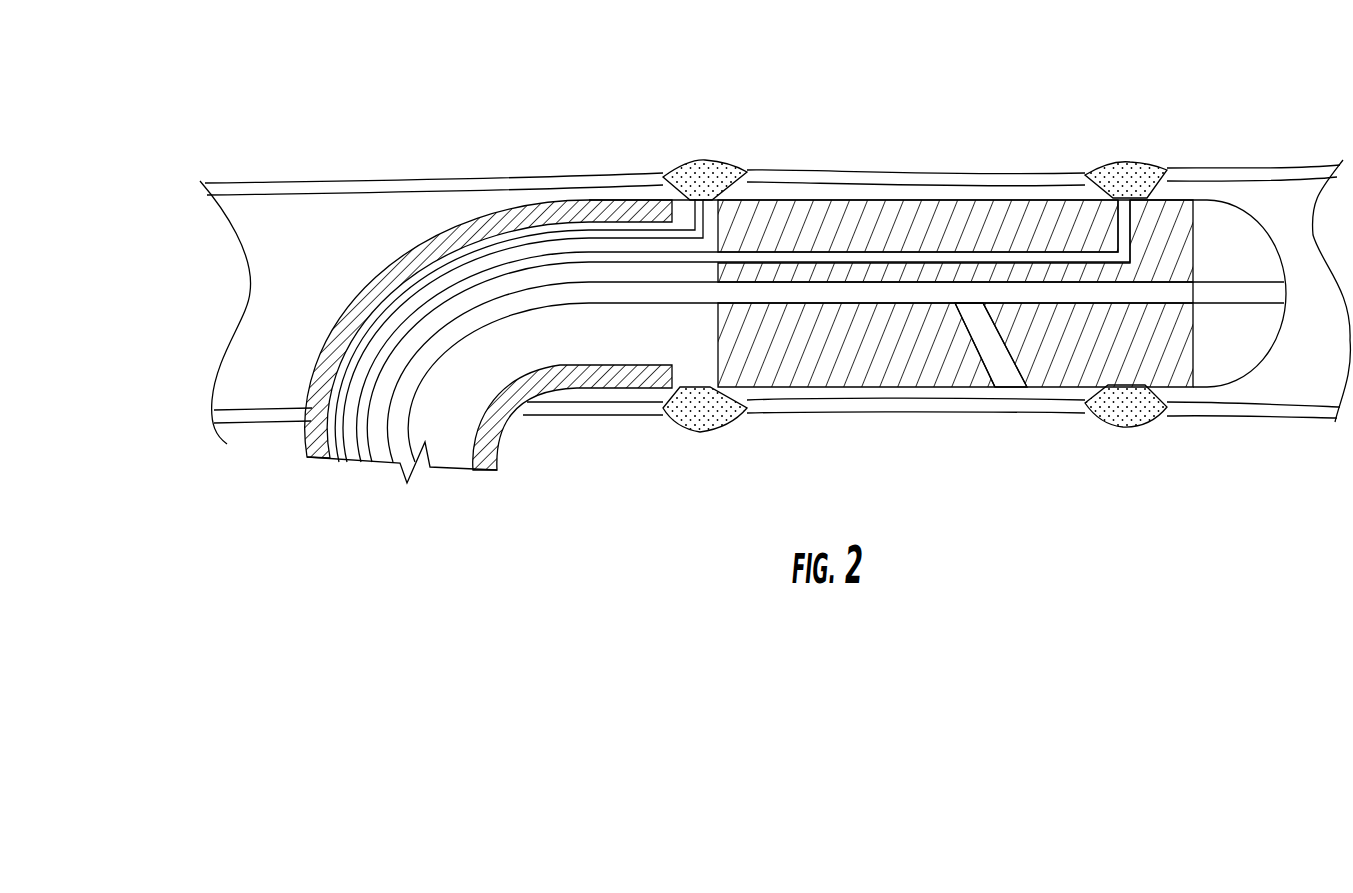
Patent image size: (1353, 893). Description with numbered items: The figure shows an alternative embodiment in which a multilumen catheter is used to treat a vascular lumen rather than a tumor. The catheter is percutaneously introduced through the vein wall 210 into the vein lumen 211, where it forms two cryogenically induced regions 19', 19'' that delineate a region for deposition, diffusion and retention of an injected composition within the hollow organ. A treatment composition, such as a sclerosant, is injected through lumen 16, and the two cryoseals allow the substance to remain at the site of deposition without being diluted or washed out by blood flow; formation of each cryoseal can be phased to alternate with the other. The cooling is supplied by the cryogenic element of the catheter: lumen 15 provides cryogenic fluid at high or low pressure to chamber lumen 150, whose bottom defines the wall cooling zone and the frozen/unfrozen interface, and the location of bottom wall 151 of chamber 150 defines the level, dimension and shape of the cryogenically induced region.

The vein wall 210 is at (347, 184).
The vein lumen 211 is at (275, 297).
The chamber lumen 150 is at (525, 340).
The lumen 15 is at (597, 242).
The bottom wall 151 is at (718, 325).
The lumen 16 is at (1047, 293).
The cryogenically induced region 19' is at (705, 323).
The cryogenically induced region 19'' is at (1139, 333).